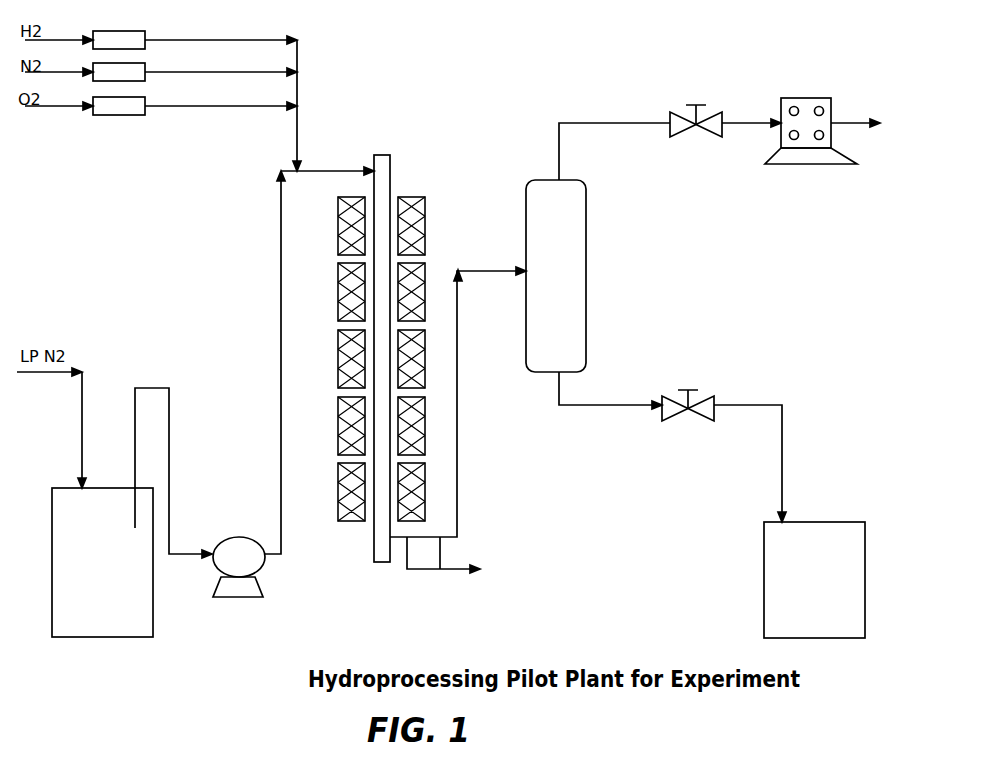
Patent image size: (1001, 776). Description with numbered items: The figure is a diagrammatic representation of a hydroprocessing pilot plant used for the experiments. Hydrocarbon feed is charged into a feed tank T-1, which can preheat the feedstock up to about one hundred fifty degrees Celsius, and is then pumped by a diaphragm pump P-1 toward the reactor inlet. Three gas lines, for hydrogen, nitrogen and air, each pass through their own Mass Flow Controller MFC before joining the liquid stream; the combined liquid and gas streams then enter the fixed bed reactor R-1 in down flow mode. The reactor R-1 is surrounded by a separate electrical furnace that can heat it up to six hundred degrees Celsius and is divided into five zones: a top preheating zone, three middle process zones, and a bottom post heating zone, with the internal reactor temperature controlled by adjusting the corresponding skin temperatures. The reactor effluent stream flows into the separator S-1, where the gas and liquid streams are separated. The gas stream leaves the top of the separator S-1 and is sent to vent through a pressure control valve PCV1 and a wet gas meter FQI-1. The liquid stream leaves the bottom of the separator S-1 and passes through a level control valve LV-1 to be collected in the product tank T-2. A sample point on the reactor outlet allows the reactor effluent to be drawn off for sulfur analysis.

The Mass Flow Controller MFC is at (119, 73).
The feed tank T-1 is at (102, 576).
The diaphragm pump P-1 is at (225, 592).
The fixed bed reactor R-1 is at (443, 385).
The separator S-1 is at (581, 276).
The pressure control valve PCV1 is at (696, 140).
The level control valve LV-1 is at (688, 424).
The wet gas meter FQI-1 is at (828, 161).
The product tank T-2 is at (814, 593).